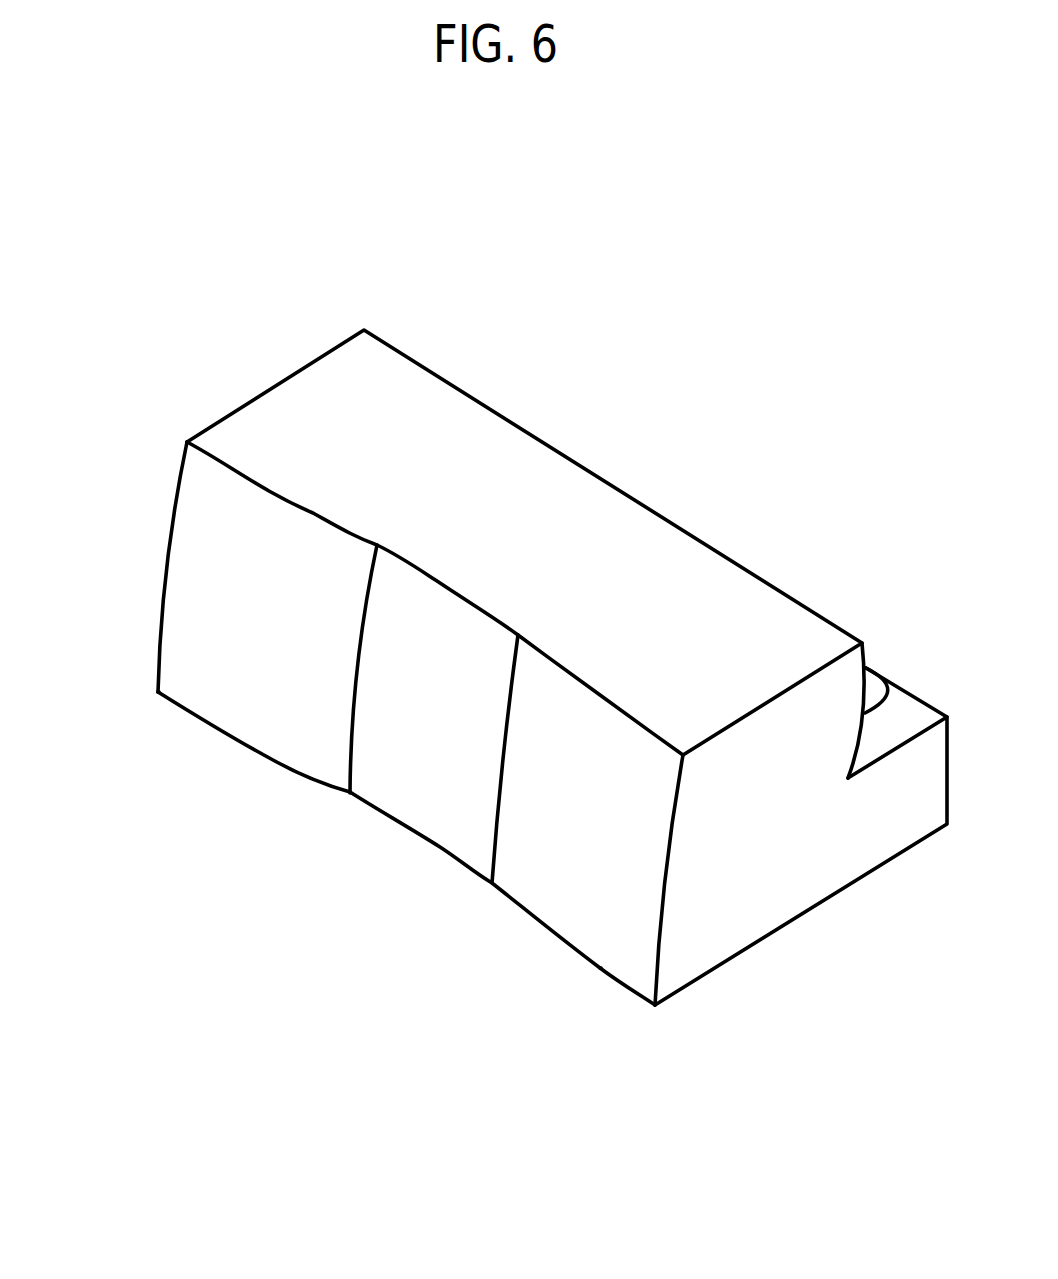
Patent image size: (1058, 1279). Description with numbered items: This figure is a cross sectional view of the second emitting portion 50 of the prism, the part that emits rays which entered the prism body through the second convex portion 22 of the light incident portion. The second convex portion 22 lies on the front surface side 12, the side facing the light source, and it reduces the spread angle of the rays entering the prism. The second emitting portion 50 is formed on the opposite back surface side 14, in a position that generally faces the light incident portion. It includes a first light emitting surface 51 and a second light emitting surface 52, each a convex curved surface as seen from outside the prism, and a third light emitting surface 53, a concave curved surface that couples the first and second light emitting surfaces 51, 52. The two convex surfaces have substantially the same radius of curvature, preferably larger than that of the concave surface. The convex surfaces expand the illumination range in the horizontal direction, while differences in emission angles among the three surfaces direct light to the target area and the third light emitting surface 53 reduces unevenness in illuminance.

The front surface side 12 is at (687, 448).
The back surface side 14 is at (113, 1015).
The second convex portion 22 is at (888, 690).
The second emitting portion 50 is at (307, 938).
The first light emitting surface 51 is at (251, 673).
The second light emitting surface 52 is at (583, 895).
The third light emitting surface 53 is at (432, 780).